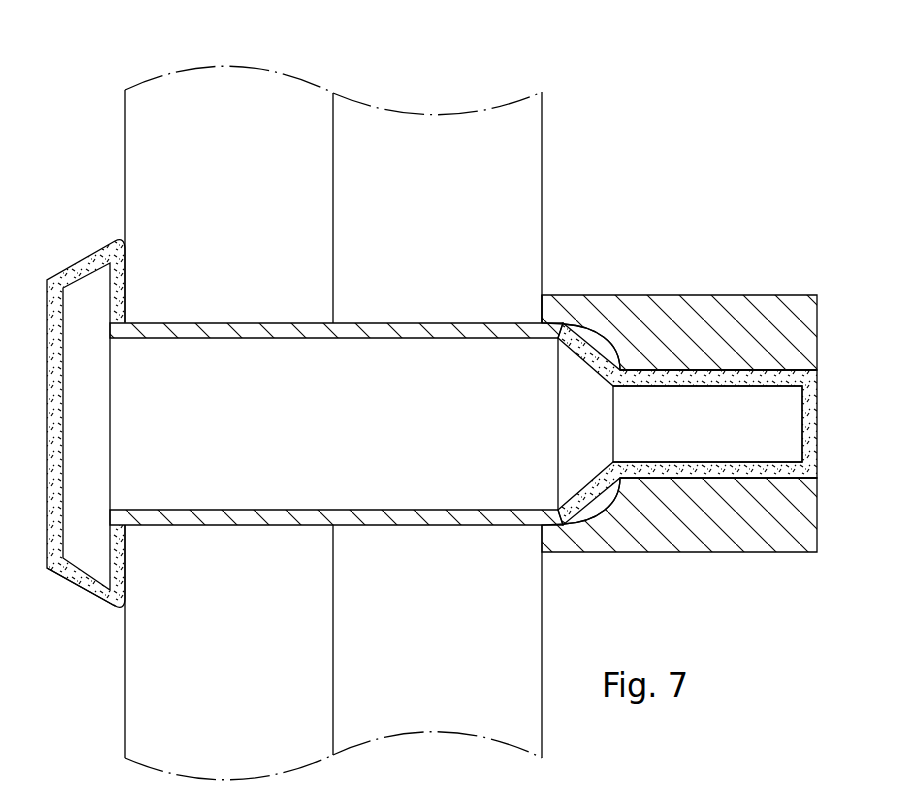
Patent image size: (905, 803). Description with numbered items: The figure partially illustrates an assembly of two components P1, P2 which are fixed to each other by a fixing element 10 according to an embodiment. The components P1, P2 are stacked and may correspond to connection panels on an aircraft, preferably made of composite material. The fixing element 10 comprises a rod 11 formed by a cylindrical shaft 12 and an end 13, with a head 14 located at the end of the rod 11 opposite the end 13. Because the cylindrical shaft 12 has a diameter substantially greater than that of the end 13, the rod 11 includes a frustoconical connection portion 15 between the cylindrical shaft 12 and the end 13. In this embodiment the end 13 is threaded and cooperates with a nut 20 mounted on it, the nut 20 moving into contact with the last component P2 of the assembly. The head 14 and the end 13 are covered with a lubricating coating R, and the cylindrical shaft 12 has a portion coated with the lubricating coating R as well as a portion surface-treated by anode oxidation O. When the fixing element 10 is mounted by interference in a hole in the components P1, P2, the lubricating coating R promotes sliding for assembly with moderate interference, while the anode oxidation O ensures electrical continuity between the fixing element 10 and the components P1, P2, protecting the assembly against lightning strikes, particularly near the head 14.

The fixing element 10 is at (433, 424).
The rod 11 is at (531, 288).
The cylindrical shaft 12 is at (427, 485).
The end 13 is at (775, 435).
The head 14 is at (72, 440).
The frustoconical connection portion 15 is at (710, 464).
The nut 20 is at (742, 322).
The anode oxidation O is at (187, 330).
The component P1 is at (218, 88).
The component P2 is at (428, 133).
The lubricating coating R is at (58, 578).